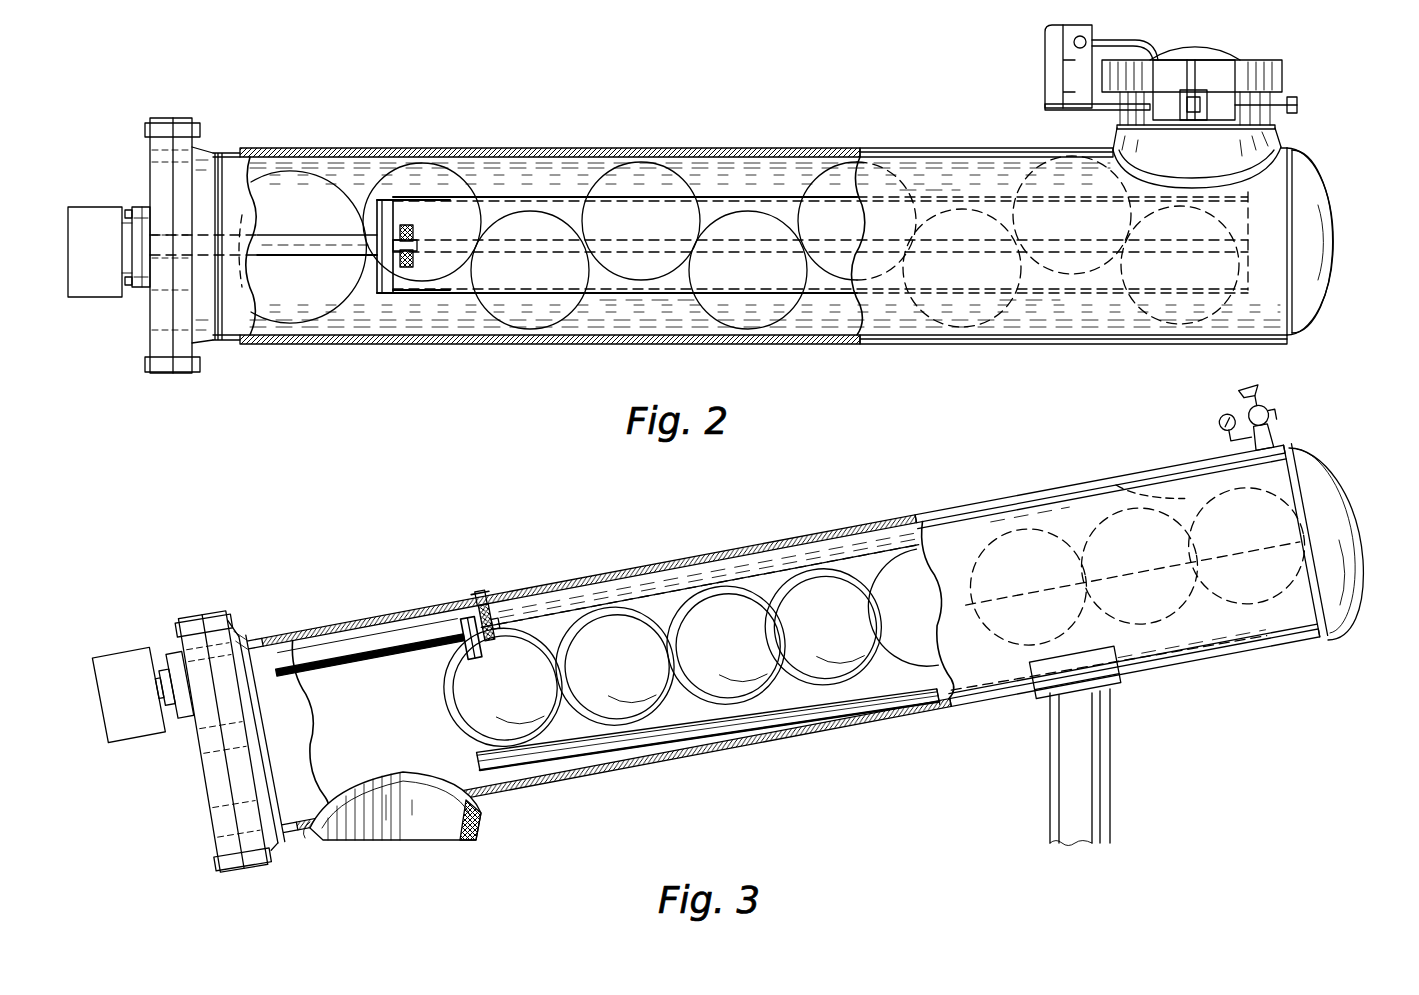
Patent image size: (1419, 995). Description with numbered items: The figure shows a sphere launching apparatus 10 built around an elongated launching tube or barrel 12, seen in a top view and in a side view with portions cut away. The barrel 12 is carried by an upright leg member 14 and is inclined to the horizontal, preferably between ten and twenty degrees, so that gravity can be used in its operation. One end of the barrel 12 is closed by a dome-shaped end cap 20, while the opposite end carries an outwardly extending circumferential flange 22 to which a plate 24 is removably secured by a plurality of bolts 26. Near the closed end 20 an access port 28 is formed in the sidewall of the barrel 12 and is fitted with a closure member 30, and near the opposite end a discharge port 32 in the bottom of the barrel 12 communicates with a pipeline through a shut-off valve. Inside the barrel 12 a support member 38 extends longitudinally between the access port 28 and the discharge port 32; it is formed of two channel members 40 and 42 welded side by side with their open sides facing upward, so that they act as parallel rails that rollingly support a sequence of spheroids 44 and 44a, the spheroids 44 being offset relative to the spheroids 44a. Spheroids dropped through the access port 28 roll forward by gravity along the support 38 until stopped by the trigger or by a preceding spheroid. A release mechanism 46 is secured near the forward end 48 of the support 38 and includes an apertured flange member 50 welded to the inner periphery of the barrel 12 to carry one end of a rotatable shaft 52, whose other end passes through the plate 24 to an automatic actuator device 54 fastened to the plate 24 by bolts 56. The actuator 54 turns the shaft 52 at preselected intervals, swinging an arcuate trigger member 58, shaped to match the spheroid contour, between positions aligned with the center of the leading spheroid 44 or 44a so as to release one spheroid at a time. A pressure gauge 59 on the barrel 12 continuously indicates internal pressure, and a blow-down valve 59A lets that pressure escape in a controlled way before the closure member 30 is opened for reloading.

In FIG. 2, the sphere launching apparatus 10 is at (568, 378).
In FIG. 2, the launching tube or barrel 12 is at (757, 344).
In FIG. 3, the launching tube or barrel 12 is at (866, 722).
In FIG. 3, the upright leg member 14 is at (1108, 768).
In FIG. 2, the end cap or dome-shaped portion 20 is at (1322, 252).
In FIG. 3, the end cap or dome-shaped portion 20 is at (1343, 573).
In FIG. 2, the circumferential flange 22 is at (185, 373).
In FIG. 3, the circumferential flange 22 is at (258, 864).
In FIG. 2, the plate 24 is at (160, 375).
In FIG. 3, the plate 24 is at (241, 868).
In FIG. 3, the bolts 26 is at (220, 863).
In FIG. 2, the access port 28 is at (1243, 145).
In FIG. 3, the access port 28 is at (1195, 505).
In FIG. 2, the closure member 30 is at (1220, 46).
In FIG. 2, the discharge port 32 is at (305, 172).
In FIG. 3, the discharge port 32 is at (460, 822).
In FIG. 2, the support member 38 is at (408, 297).
In FIG. 3, the support member 38 is at (612, 737).
In FIG. 2, the channel member 40 is at (503, 208).
In FIG. 2, the channel member 42 is at (458, 282).
In FIG. 2, the spheroids 44 is at (425, 182).
In FIG. 3, the spheroids 44 is at (470, 712).
In FIG. 2, the spheroids 44a is at (522, 315).
In FIG. 3, the spheroids 44a is at (636, 634).
In FIG. 2, the release mechanism 46 is at (333, 244).
In FIG. 3, the release mechanism 46 is at (478, 606).
In FIG. 3, the forward end of the support 48 is at (483, 758).
In FIG. 2, the apertured flange member 50 is at (410, 234).
In FIG. 3, the apertured flange member 50 is at (487, 638).
In FIG. 2, the rotatable shaft 52 is at (292, 245).
In FIG. 3, the rotatable shaft 52 is at (333, 650).
In FIG. 2, the automatic actuator device 54 is at (92, 232).
In FIG. 3, the automatic actuator device 54 is at (139, 722).
In FIG. 2, the bolts 56 is at (135, 222).
In FIG. 3, the bolts 56 is at (165, 656).
In FIG. 2, the arcuate trigger member 58 is at (388, 205).
In FIG. 3, the arcuate trigger member 58 is at (462, 650).
In FIG. 3, the pressure gauge 59 is at (1222, 410).
In FIG. 3, the blow-down valve 59A is at (1270, 403).